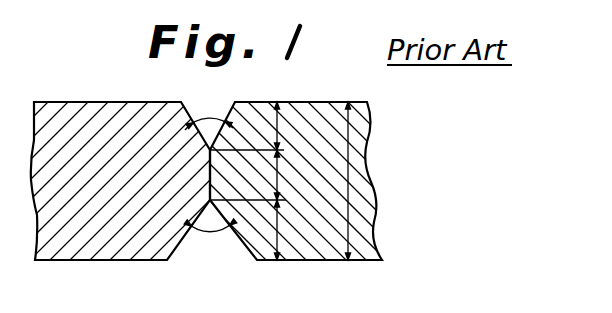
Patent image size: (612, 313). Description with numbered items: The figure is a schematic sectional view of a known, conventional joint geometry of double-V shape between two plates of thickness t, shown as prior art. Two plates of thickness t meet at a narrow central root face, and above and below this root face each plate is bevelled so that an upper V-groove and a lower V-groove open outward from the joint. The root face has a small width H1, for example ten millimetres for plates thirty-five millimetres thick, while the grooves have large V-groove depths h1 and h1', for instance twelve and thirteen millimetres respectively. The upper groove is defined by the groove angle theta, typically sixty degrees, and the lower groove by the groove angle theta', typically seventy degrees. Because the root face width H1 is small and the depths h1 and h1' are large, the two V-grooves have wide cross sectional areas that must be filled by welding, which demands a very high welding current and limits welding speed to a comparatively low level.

The groove angle theta is at (209, 123).
The groove angle theta' is at (210, 232).
The V-groove depth h1 is at (277, 126).
The root face width H1 is at (252, 175).
The V-groove depth h1' is at (279, 230).
The plate thickness t is at (348, 181).